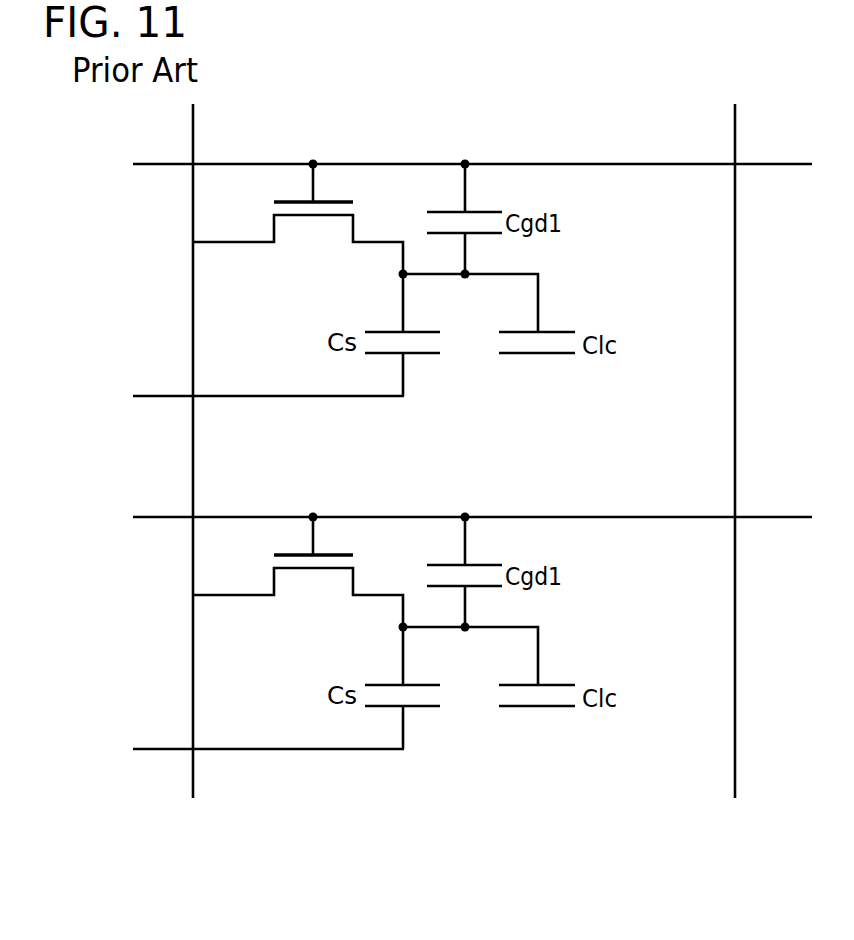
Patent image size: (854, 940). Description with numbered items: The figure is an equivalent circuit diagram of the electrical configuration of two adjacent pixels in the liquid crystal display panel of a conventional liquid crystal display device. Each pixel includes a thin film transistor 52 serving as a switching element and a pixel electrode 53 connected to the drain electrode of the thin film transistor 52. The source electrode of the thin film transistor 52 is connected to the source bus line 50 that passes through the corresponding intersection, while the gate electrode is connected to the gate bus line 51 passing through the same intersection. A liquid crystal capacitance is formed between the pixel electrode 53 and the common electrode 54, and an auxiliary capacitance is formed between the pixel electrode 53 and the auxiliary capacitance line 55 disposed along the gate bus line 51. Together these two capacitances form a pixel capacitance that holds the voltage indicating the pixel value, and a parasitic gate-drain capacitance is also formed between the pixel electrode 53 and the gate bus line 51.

The source bus line 50 is at (193, 283).
The gate bus line 51 is at (266, 161).
The thin film transistor 52 is at (257, 213).
The pixel electrode 53 is at (558, 331).
The common electrode 54 is at (561, 355).
The storage capacitor line 55 is at (246, 398).